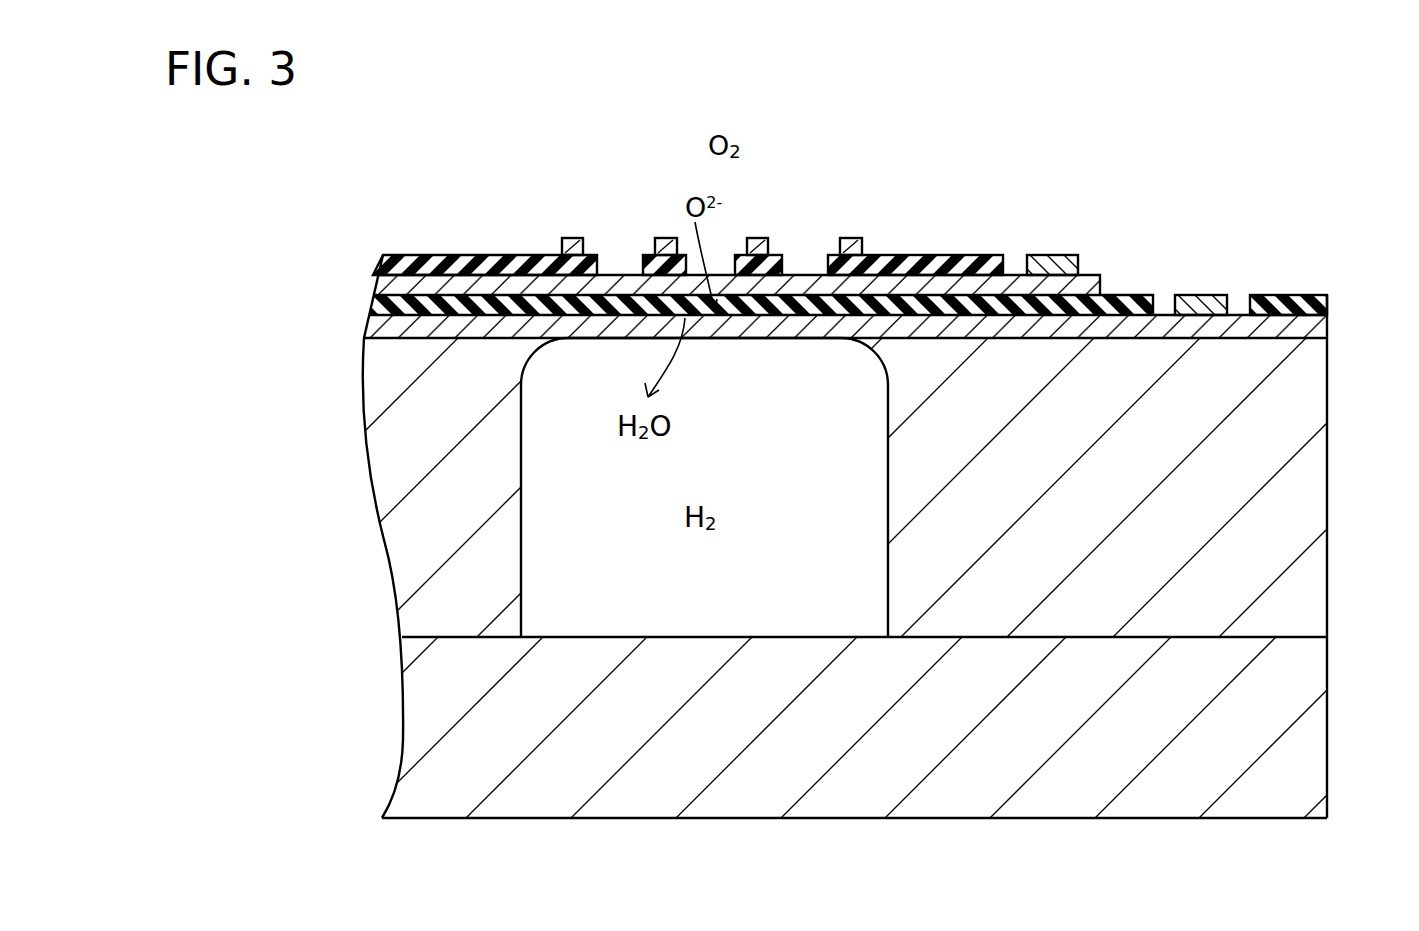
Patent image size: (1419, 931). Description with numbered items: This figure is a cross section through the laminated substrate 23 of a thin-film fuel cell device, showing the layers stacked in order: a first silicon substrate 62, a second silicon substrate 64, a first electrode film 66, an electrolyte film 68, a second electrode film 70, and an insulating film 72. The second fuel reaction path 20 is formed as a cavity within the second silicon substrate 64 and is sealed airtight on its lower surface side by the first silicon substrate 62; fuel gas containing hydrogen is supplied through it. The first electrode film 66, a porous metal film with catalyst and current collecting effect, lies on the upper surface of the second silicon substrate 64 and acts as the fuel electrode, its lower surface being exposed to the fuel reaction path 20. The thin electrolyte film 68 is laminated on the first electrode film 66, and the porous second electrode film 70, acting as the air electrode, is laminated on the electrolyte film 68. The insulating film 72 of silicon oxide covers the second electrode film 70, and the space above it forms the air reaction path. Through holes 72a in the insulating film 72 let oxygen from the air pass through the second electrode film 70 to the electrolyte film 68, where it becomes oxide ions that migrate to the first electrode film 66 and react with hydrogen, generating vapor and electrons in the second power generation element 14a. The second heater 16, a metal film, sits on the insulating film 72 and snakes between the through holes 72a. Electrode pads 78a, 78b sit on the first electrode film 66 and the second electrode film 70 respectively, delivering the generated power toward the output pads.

The second power generation element 14a is at (684, 137).
The second heater 16 is at (577, 238).
The second fuel reaction path 20 is at (786, 471).
The substrate 23 is at (1304, 131).
The first silicon substrate 62 is at (1303, 681).
The second silicon substrate 64 is at (1308, 482).
The first electrode film 66 is at (1317, 327).
The electrolyte film 68 is at (1145, 295).
The second electrode film 70 is at (1095, 275).
The insulating film 72 is at (710, 224).
The through holes 72a is at (643, 255).
The electrode pad 78a is at (1203, 295).
The electrode pad 78b is at (1057, 255).